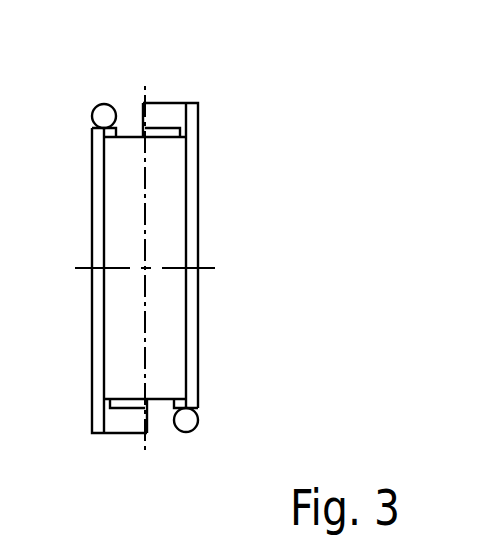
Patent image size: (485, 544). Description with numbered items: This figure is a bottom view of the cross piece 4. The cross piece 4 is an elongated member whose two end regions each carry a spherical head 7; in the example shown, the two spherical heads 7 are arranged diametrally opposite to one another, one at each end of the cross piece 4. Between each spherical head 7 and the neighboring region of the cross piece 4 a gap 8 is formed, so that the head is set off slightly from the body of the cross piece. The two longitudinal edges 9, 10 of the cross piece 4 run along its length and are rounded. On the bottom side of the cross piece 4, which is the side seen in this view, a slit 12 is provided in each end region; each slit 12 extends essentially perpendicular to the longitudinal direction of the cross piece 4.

The cross piece 4 is at (172, 343).
The spherical head 7 is at (94, 105).
The gap 8 is at (128, 119).
The longitudinal edge 9 is at (199, 230).
The longitudinal edge 10 is at (92, 243).
The slit 12 is at (174, 128).